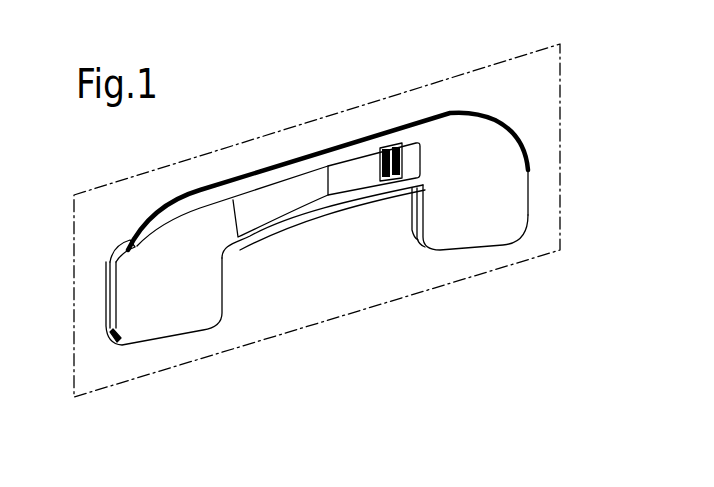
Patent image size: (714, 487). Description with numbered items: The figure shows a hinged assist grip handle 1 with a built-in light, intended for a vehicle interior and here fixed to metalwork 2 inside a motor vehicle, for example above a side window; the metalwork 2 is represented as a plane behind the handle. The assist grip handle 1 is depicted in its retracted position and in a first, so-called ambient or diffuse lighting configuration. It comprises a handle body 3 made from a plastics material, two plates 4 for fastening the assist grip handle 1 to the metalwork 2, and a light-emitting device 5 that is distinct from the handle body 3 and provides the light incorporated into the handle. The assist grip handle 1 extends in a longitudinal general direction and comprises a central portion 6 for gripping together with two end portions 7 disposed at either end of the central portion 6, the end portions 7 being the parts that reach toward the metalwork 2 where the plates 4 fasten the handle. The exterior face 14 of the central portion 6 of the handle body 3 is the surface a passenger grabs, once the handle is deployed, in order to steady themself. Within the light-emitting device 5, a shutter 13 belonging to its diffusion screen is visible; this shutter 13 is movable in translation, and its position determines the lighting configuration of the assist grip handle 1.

The assist grip handle 1 is at (541, 163).
The metalwork 2 is at (550, 106).
The handle body 3 is at (279, 157).
The plates 4 is at (112, 249).
The light-emitting device 5 is at (290, 206).
The central portion 6 is at (373, 145).
The end portions 7 is at (175, 318).
The shutter 13 is at (360, 172).
The exterior face 14 is at (481, 131).